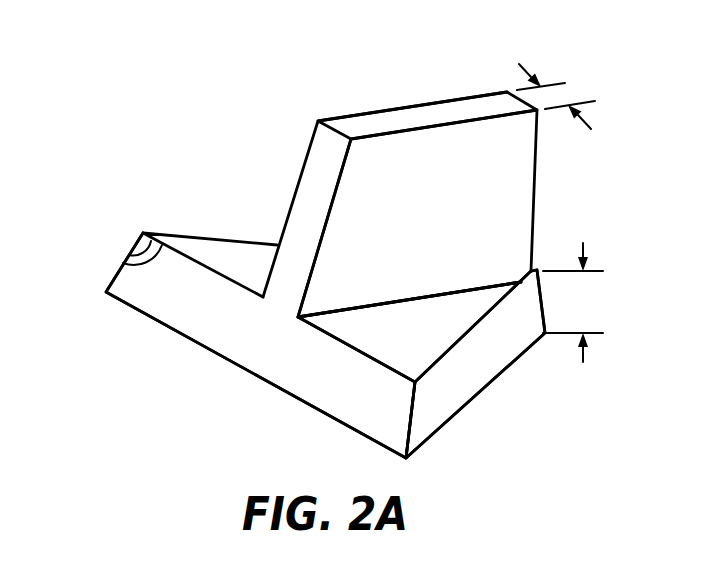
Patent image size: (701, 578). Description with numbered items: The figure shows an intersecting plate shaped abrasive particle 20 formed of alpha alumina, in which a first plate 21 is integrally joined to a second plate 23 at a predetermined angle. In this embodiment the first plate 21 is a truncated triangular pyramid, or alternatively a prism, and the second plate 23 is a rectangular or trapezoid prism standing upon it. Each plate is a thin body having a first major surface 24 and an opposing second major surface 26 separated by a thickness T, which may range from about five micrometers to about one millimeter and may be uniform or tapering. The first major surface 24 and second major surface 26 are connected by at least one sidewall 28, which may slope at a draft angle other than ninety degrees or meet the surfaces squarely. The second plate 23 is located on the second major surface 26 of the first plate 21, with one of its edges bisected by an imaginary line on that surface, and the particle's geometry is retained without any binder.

The shaped abrasive particle 20 is at (261, 62).
The first plate 21 is at (486, 409).
The second plate 23 is at (547, 173).
The first major surface 24 is at (438, 219).
The second major surface 26 is at (391, 109).
The sidewall 28 is at (502, 356).
The thickness T is at (560, 97).